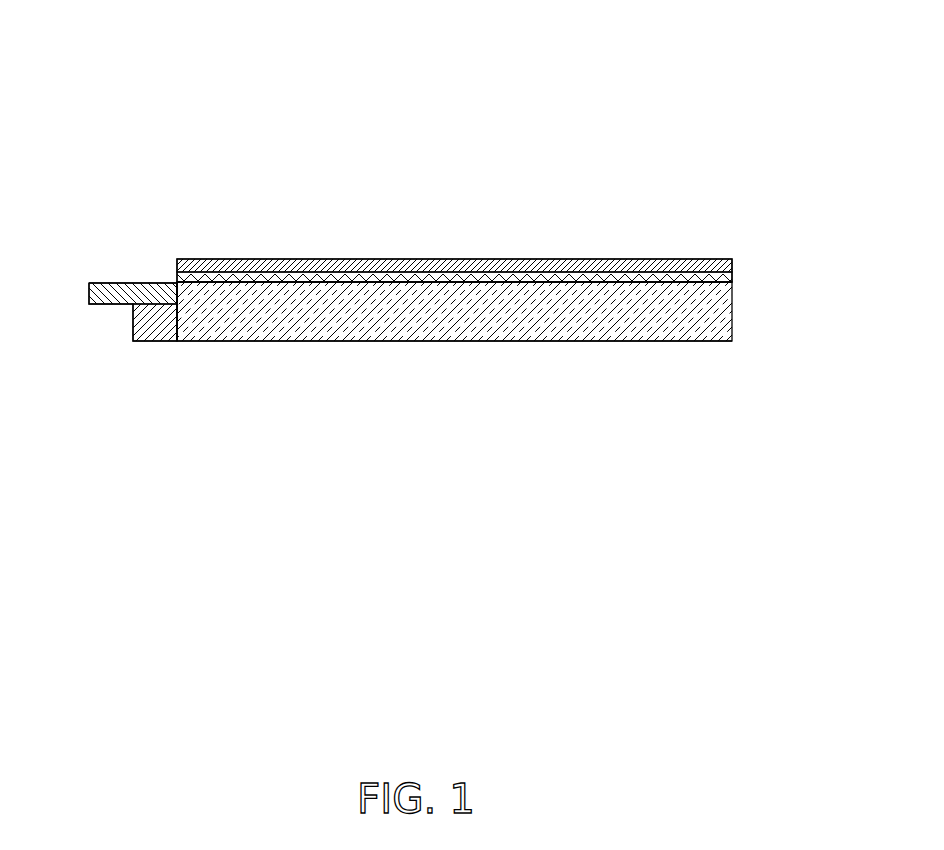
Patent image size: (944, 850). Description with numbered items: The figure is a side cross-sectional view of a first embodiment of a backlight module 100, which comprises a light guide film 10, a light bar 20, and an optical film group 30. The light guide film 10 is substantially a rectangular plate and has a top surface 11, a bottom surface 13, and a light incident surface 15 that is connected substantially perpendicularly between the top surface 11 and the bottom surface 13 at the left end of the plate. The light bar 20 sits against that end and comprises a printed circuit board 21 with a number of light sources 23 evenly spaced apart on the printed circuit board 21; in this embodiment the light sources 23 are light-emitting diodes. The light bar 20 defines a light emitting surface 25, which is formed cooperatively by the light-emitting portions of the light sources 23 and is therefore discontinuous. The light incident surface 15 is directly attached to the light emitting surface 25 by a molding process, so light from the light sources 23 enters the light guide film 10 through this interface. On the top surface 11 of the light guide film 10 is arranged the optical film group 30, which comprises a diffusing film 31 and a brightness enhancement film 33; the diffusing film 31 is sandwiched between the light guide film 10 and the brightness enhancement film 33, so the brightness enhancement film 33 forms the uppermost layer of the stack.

The backlight module 100 is at (408, 48).
The light guide film 10 is at (673, 328).
The top surface 11 is at (513, 282).
The bottom surface 13 is at (510, 342).
The light incident surface 15 is at (177, 326).
The light bar 20 is at (64, 396).
The printed circuit board 21 is at (108, 302).
The light sources 23 is at (152, 326).
The light emitting surface 25 is at (179, 314).
The optical film group 30 is at (762, 187).
The diffusing film 31 is at (733, 273).
The brightness enhancement film 33 is at (695, 259).